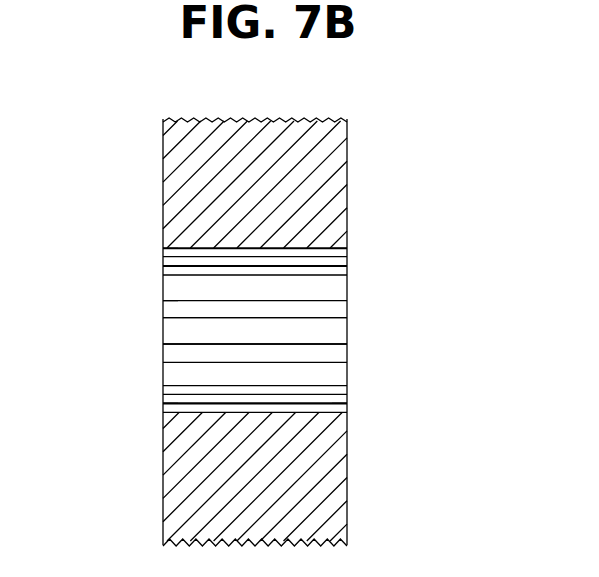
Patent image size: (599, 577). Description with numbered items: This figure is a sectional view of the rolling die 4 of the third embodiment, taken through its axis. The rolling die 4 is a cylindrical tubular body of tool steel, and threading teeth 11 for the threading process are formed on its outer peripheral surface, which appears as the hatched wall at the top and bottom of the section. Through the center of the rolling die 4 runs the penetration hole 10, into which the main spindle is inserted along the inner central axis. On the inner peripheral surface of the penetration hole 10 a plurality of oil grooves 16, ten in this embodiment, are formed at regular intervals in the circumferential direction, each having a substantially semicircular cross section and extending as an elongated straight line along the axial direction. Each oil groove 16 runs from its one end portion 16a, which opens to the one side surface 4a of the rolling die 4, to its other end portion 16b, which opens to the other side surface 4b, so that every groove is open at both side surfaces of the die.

The rolling die 4 is at (367, 117).
The one side surface 4a is at (162, 176).
The other side surface 4b is at (347, 177).
The threading teeth 11 is at (200, 118).
The oil groove 16 is at (282, 251).
The one end portion 16a is at (163, 249).
The other end portion 16b is at (347, 249).
The penetration hole 10 is at (308, 330).